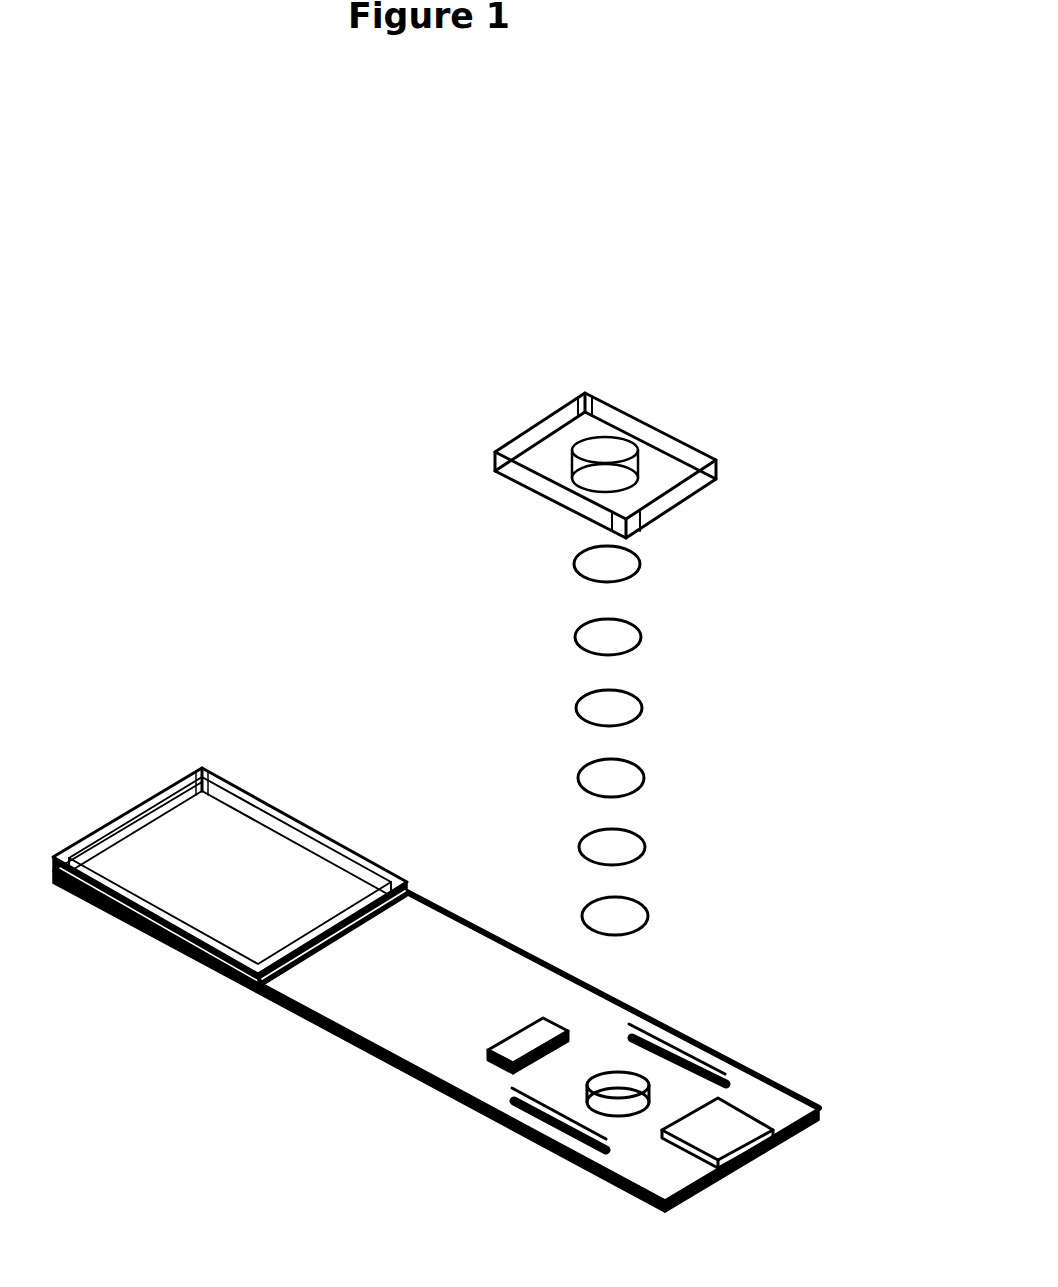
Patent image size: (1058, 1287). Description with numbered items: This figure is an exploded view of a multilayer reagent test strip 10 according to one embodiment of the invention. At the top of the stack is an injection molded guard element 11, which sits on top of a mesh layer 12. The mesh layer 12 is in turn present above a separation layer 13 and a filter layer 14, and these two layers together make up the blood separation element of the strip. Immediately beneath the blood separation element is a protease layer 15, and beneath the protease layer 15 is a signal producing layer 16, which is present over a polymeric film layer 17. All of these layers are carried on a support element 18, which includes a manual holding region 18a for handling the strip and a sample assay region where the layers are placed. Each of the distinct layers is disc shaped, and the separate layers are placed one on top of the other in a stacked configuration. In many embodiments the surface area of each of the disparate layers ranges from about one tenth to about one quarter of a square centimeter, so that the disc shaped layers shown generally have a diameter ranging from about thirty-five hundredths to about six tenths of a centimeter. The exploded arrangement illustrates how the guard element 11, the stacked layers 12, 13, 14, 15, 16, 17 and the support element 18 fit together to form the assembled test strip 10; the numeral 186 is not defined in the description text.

The multilayer reagent test strip 10 is at (721, 352).
The injection molded guard element 11 is at (509, 451).
The mesh layer 12 is at (551, 570).
The separation layer 13 is at (553, 643).
The filter layer 14 is at (554, 715).
The protease layer 15 is at (558, 784).
The signal producing layer 16 is at (558, 854).
The polymeric film layer 17 is at (615, 915).
The support element 18 is at (479, 990).
The manual holding region 18a is at (253, 877).
The contact pad 186 is at (682, 1103).